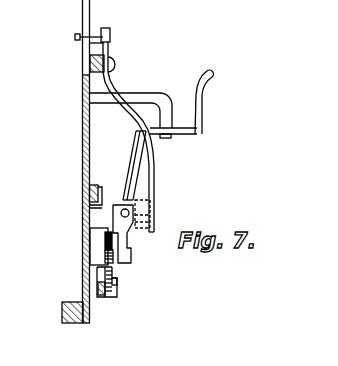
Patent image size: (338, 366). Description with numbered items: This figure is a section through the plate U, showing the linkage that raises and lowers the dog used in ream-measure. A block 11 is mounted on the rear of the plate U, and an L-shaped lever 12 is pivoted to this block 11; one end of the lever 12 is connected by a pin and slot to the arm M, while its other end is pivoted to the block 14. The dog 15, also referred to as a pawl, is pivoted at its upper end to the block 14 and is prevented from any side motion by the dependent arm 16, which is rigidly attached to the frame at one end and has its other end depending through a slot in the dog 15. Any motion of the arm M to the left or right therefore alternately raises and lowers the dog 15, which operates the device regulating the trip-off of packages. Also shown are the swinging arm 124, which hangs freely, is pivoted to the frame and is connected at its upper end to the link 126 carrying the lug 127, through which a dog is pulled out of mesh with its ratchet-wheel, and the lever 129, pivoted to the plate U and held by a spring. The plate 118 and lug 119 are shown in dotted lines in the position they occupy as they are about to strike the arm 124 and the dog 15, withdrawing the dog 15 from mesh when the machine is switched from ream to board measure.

The block 11 is at (90, 243).
The L-shaped lever 12 is at (117, 275).
The block 14 is at (121, 238).
The dog 15 is at (204, 104).
The dependent arm 16 is at (147, 95).
The plate 118 is at (143, 208).
The lug 119 is at (151, 218).
The swinging arm 124 is at (112, 82).
The link 126 is at (110, 37).
The lug 127 is at (75, 36).
The lever 129 is at (93, 195).
The plate U is at (82, 172).
The upper wall V is at (82, 50).
The arm M is at (113, 298).